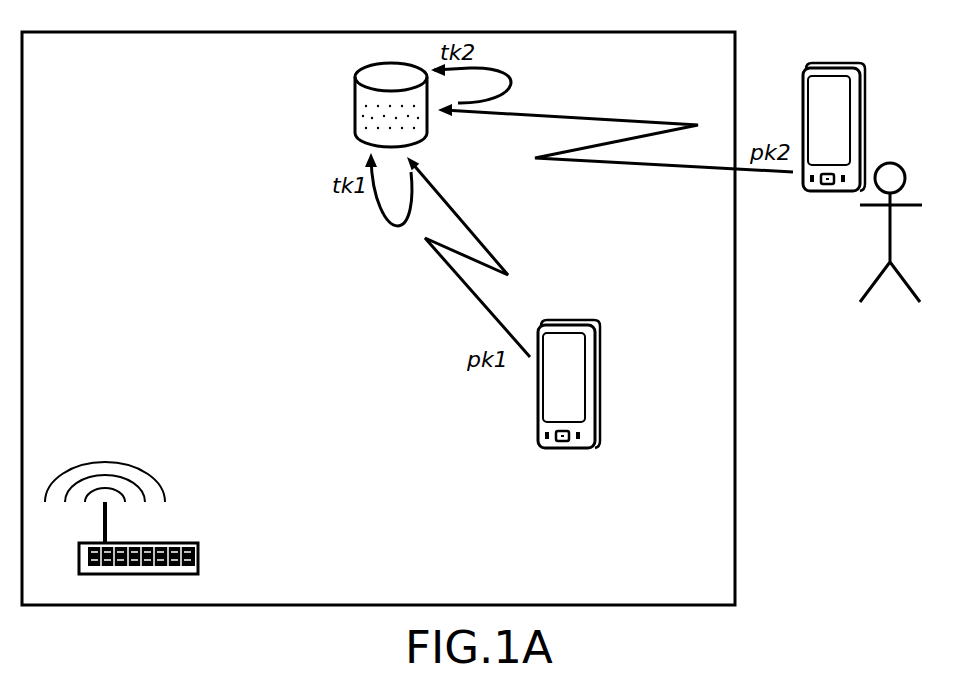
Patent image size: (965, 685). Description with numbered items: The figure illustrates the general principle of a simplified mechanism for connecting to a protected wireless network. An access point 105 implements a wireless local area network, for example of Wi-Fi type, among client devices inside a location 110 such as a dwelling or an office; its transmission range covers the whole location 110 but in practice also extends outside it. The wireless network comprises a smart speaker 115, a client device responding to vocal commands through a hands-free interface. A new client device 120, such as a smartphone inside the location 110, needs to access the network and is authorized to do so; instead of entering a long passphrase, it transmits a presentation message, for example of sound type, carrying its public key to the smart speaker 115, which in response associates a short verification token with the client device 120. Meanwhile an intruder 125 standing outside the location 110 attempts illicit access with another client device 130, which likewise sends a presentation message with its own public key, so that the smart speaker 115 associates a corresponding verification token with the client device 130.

The access point 105 is at (170, 543).
The location 110 is at (87, 77).
The smart speaker 115 is at (355, 100).
The client device 120 is at (592, 402).
The intruder 125 is at (888, 237).
The client device 130 is at (833, 63).